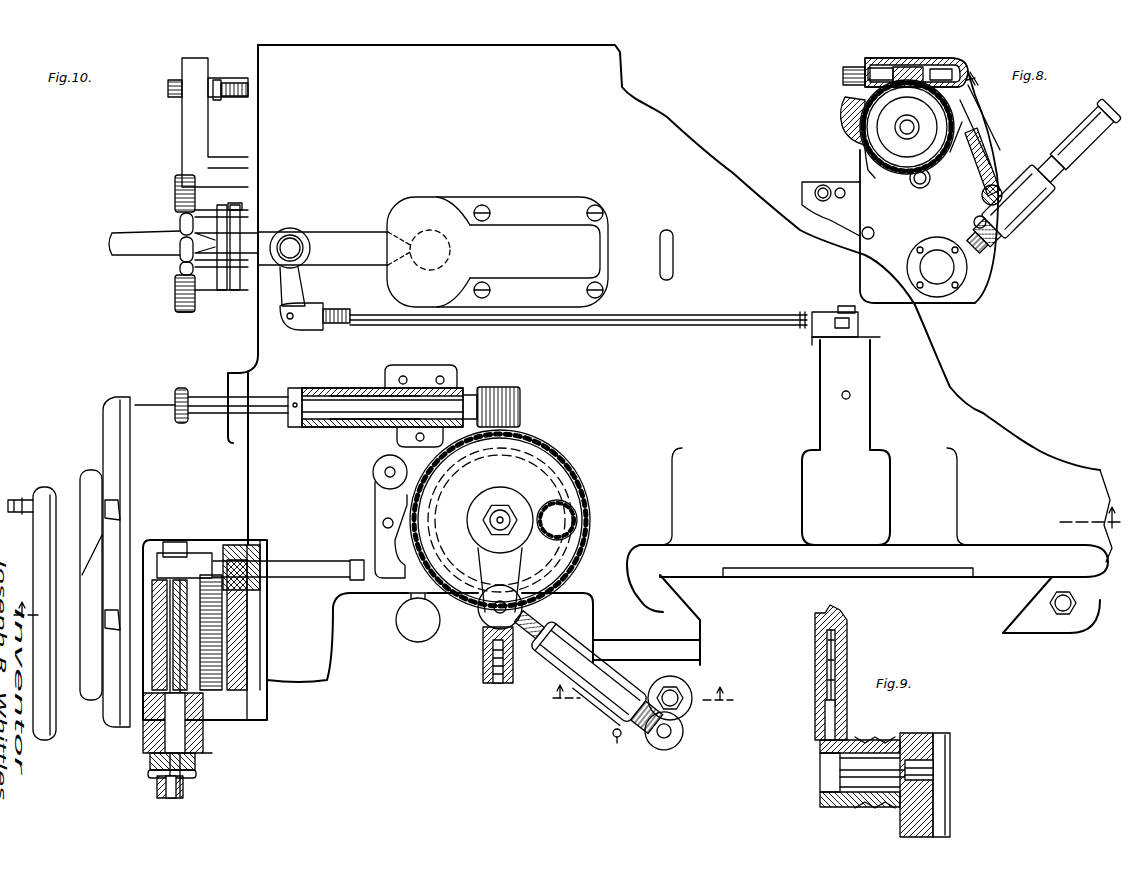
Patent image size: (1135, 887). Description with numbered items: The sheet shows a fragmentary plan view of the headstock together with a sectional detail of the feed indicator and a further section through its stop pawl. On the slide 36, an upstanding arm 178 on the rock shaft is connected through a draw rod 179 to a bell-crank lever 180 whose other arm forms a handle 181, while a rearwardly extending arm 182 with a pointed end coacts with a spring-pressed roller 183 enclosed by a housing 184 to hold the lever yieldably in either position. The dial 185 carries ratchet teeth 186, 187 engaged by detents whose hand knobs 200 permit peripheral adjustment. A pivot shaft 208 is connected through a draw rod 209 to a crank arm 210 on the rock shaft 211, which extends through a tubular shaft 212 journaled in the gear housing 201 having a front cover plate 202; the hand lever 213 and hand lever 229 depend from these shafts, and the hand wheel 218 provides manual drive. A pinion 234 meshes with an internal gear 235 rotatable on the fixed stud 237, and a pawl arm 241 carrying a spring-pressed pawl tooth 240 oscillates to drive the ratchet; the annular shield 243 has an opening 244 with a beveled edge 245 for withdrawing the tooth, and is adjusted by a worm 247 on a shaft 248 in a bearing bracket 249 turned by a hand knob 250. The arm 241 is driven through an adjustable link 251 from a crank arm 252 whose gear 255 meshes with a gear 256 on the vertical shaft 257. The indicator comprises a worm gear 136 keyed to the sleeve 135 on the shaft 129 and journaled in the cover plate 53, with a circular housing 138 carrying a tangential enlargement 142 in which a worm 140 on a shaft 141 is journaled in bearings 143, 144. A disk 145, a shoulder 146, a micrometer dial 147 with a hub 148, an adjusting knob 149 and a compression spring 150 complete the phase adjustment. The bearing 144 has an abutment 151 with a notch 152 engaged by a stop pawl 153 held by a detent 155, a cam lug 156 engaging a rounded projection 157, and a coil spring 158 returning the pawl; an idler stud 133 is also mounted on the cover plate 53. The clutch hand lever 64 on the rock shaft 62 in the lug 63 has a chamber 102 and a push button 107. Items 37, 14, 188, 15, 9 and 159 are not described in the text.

In FIG. 10, the slide 36 is at (990, 440).
In FIG. 10, the frame lug 37 is at (680, 620).
In FIG. 10, the section line 14 is at (567, 572).
In FIG. 10, the bolt 188 is at (232, 207).
In FIG. 10, the ratchet teeth 186 is at (177, 193).
In FIG. 10, the dial 185 is at (177, 294).
In FIG. 10, the ratchet teeth 187 is at (192, 304).
In FIG. 10, the hand knobs 200 is at (181, 268).
In FIG. 10, the handle 181 is at (124, 232).
In FIG. 10, the bell-crank lever 180 is at (272, 230).
In FIG. 10, the rearwardly extending arm 182 is at (352, 230).
In FIG. 10, the housing 184 is at (520, 198).
In FIG. 10, the spring-pressed roller 183 is at (432, 230).
In FIG. 10, the draw rod 179 is at (718, 316).
In FIG. 10, the upstanding arm 178 is at (858, 328).
In FIG. 10, the hand knob 250 is at (181, 387).
In FIG. 10, the gear housing 201 is at (138, 404).
In FIG. 10, the shaft 248 is at (272, 396).
In FIG. 10, the bearing bracket 249 is at (350, 386).
In FIG. 10, the worm 247 is at (521, 405).
In FIG. 10, the annular shield 243 is at (588, 558).
In FIG. 10, the pinion 234 is at (572, 497).
In FIG. 10, the internal gear 235 is at (567, 487).
In FIG. 10, the stud 237 is at (505, 508).
In FIG. 10, the pawl arm 241 is at (480, 600).
In FIG. 10, the pawl tooth 240 is at (484, 645).
In FIG. 10, the beveled edge 245 is at (460, 598).
In FIG. 10, the opening 244 is at (405, 462).
In FIG. 10, the pivot shaft 208 is at (385, 472).
In FIG. 10, the draw rod 209 is at (297, 560).
In FIG. 10, the link 251 is at (564, 640).
In FIG. 10, the vertical shaft 257 is at (690, 720).
In FIG. 10, the gear 256 is at (690, 683).
In FIG. 10, the gear 255 is at (600, 717).
In FIG. 10, the crank arm 252 is at (630, 738).
In FIG. 10, the section line 15 is at (635, 704).
In FIG. 10, the front cover plate 202 is at (102, 431).
In FIG. 10, the hand wheel 218 is at (40, 486).
In FIG. 10, the crank arm 210 is at (190, 555).
In FIG. 10, the tubular shaft 212 is at (205, 742).
In FIG. 10, the rock shaft 211 is at (205, 760).
In FIG. 10, the hand lever 229 is at (150, 758).
In FIG. 10, the hand lever 213 is at (185, 790).
In FIG. 8, the worm 140 is at (940, 58).
In FIG. 8, the shoulder 146 is at (843, 73).
In FIG. 8, the tangential enlargement 142 is at (910, 66).
In FIG. 8, the shaft 141 is at (882, 66).
In FIG. 8, the bearing 144 is at (945, 68).
In FIG. 8, the disk 145 is at (870, 58).
In FIG. 8, the micrometer dial 147 is at (860, 60).
In FIG. 8, the hub 148 is at (825, 48).
In FIG. 8, the adjusting knob 149 is at (845, 66).
In FIG. 8, the compression spring 150 is at (848, 84).
In FIG. 8, the abutment 151 is at (972, 66).
In FIG. 8, the notch 152 is at (978, 72).
In FIG. 8, the section arrow 9 is at (976, 76).
In FIG. 8, the bearing 143 is at (862, 97).
In FIG. 8, the shaft 129 is at (882, 128).
In FIG. 8, the sleeve 135 is at (920, 120).
In FIG. 8, the cam lug 156 is at (845, 120).
In FIG. 8, the worm gear 136 is at (872, 160).
In FIG. 8, the housing 138 is at (890, 170).
In FIG. 8, the stud 133 is at (918, 188).
In FIG. 8, the stop pawl 153 is at (985, 115).
In FIG. 9, the stop pawl 153 is at (848, 655).
In FIG. 8, the detent 155 is at (995, 165).
In FIG. 9, the detent 155 is at (825, 725).
In FIG. 8, the rounded projection 157 is at (957, 150).
In FIG. 8, the pin 159 is at (998, 185).
In FIG. 8, the cover plate 53 is at (980, 290).
In FIG. 9, the cover plate 53 is at (922, 733).
In FIG. 8, the chamber 102 is at (1045, 212).
In FIG. 8, the hand lever 64 is at (1090, 140).
In FIG. 8, the push button 107 is at (1112, 112).
In FIG. 8, the lug 63 is at (1020, 238).
In FIG. 8, the rock shaft 62 is at (1015, 256).
In FIG. 9, the coil spring 158 is at (880, 740).